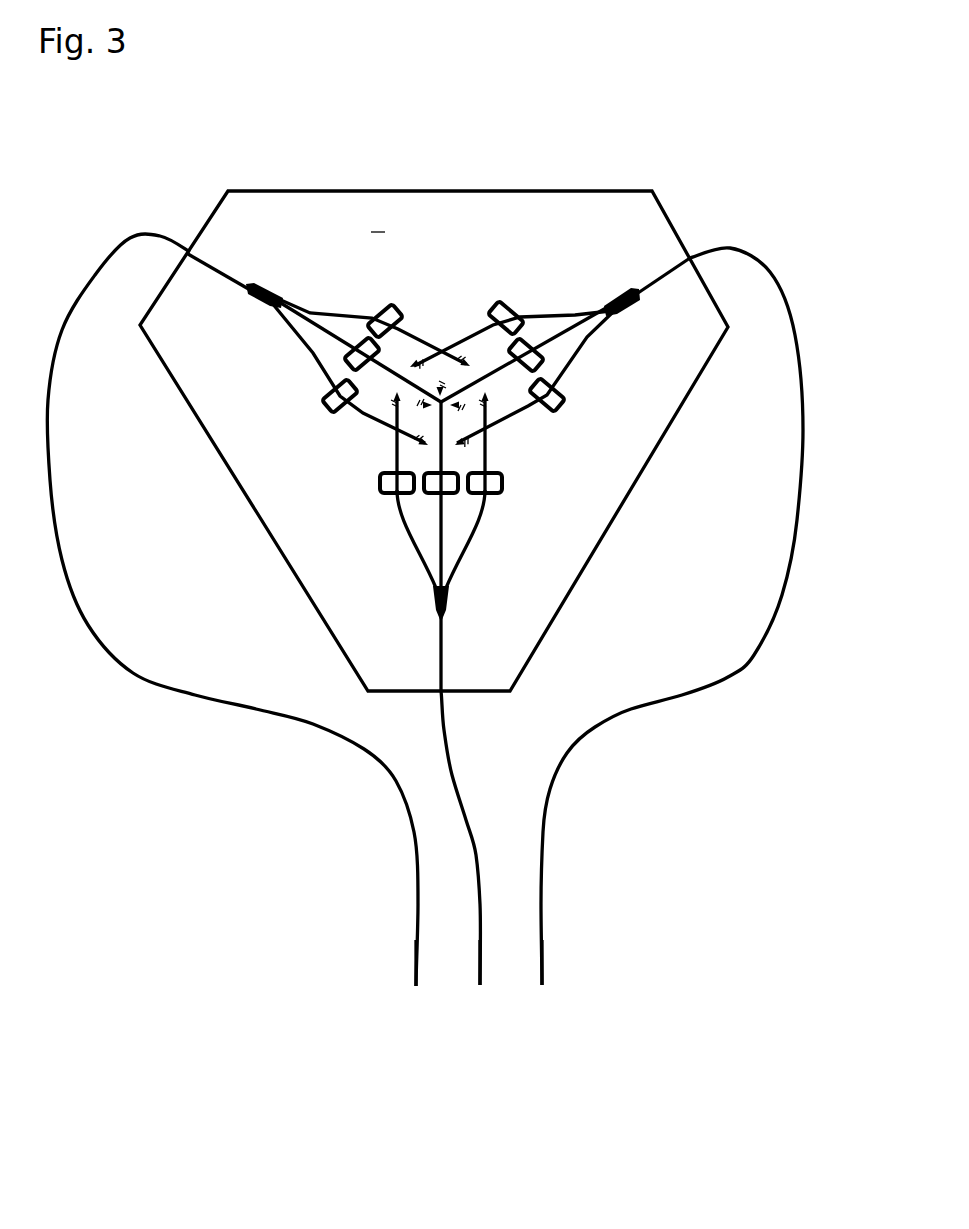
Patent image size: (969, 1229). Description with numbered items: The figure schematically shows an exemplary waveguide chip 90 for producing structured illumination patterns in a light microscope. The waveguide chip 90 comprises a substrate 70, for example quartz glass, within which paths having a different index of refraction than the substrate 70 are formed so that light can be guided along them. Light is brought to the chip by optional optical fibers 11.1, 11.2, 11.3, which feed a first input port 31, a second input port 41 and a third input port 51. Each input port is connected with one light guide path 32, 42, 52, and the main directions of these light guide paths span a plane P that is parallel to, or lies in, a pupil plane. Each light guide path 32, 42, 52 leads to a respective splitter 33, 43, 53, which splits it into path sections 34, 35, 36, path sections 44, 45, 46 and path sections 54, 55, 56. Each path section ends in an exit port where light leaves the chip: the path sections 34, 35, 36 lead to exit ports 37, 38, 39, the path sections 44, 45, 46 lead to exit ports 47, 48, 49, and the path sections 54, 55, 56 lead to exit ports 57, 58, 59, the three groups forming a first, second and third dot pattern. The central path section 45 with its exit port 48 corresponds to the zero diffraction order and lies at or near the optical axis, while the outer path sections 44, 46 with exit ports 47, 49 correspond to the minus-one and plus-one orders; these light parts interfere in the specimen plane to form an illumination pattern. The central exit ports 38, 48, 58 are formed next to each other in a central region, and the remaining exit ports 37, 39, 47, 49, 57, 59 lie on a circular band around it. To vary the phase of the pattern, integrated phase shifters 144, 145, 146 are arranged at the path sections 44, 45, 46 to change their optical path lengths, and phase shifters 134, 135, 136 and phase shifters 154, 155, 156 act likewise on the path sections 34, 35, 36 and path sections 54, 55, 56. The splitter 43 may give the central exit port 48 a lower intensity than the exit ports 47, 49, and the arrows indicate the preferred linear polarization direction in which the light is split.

The waveguide chip 90 is at (475, 190).
The substrate 70 is at (339, 590).
The third input port 51 is at (190, 249).
The first input port 31 is at (694, 252).
The light guide path 52 is at (220, 271).
The light guide path 32 is at (661, 279).
The splitter 53 is at (265, 287).
The splitter 33 is at (617, 290).
The path section 54 is at (340, 314).
The phase shifter 154 is at (386, 304).
The exit port 57 is at (466, 360).
The path section 34 is at (547, 313).
The phase shifter 134 is at (500, 300).
The exit port 37 is at (414, 358).
The path section 55 is at (384, 358).
The phase shifter 155 is at (331, 381).
The path section 35 is at (497, 365).
The phase shifter 135 is at (542, 365).
The path section 56 is at (292, 328).
The phase shifter 156 is at (322, 412).
The path section 36 is at (587, 337).
The phase shifter 136 is at (562, 400).
The exit port 59 is at (424, 448).
The exit port 39 is at (459, 447).
The central exit port 38 is at (438, 386).
The central exit port 58 is at (422, 406).
The central exit port 48 is at (460, 406).
The exit port 47 is at (393, 399).
The exit port 49 is at (488, 399).
The phase shifter 144 is at (385, 494).
The phase shifter 145 is at (425, 495).
The phase shifter 146 is at (503, 488).
The path section 44 is at (421, 554).
The central path section 45 is at (450, 533).
The path section 46 is at (481, 515).
The splitter 43 is at (449, 598).
The light guide path 42 is at (443, 647).
The second input port 41 is at (449, 700).
The optical fiber 11.1 is at (545, 937).
The optical fiber 11.2 is at (481, 987).
The optical fiber 11.3 is at (414, 929).